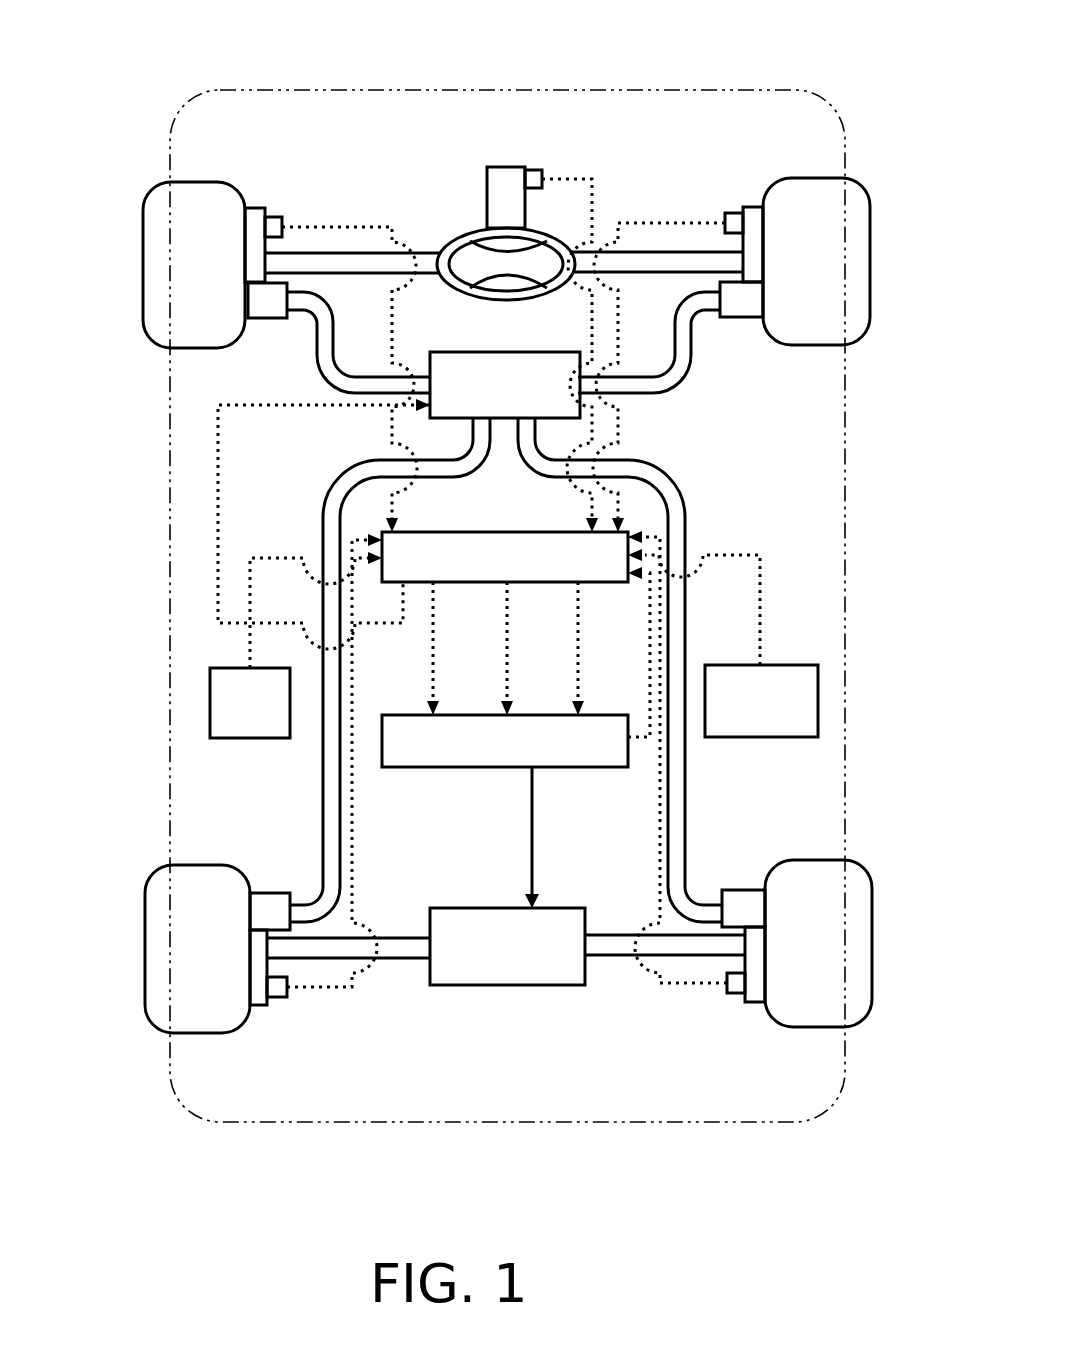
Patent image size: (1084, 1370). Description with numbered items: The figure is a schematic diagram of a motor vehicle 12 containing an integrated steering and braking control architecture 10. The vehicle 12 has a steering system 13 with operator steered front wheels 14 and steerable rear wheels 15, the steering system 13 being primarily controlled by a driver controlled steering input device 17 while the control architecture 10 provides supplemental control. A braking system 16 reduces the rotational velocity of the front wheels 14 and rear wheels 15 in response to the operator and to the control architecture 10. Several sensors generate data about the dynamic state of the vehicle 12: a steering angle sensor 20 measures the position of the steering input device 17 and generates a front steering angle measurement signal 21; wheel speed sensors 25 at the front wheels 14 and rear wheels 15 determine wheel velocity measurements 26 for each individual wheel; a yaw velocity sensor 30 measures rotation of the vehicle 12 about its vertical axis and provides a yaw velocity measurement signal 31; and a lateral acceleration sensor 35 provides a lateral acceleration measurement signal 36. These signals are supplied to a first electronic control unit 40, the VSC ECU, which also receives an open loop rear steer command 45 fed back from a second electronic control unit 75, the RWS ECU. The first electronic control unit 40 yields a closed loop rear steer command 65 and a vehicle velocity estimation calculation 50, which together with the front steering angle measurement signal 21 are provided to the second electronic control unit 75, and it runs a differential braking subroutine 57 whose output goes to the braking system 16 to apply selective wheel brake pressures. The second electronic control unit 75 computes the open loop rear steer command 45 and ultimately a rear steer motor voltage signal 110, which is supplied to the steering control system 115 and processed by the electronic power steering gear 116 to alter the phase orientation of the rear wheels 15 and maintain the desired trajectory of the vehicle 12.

The integrated control architecture 10 is at (765, 397).
The motor vehicle 12 is at (307, 60).
The steering system 13 is at (443, 235).
The front wheels 14 is at (143, 278).
The rear wheels 15 is at (145, 933).
The braking system 16 is at (436, 422).
The steering input device 17 is at (473, 228).
The steering angle sensor 20 is at (532, 167).
The front steering angle measurement signal 21 is at (573, 178).
The wheel speed sensors 25 is at (732, 212).
The wheel velocity measurements 26 is at (325, 223).
The yaw velocity sensor 30 is at (210, 713).
The yaw velocity measurement signal 31 is at (250, 603).
The lateral acceleration sensor 35 is at (818, 722).
The lateral acceleration measurement signal 36 is at (762, 578).
The first electronic control unit 40 is at (382, 573).
The open loop rear steer command 45 is at (650, 592).
The vehicle velocity estimation calculation 50 is at (433, 670).
The differential braking subroutine 57 is at (216, 520).
The closed loop rear steer command 65 is at (507, 630).
The second electronic control unit 75 is at (628, 757).
The rear steer motor voltage signal 110 is at (533, 873).
The steering control system 115 is at (585, 972).
The electronic power steering gear 116 is at (567, 420).